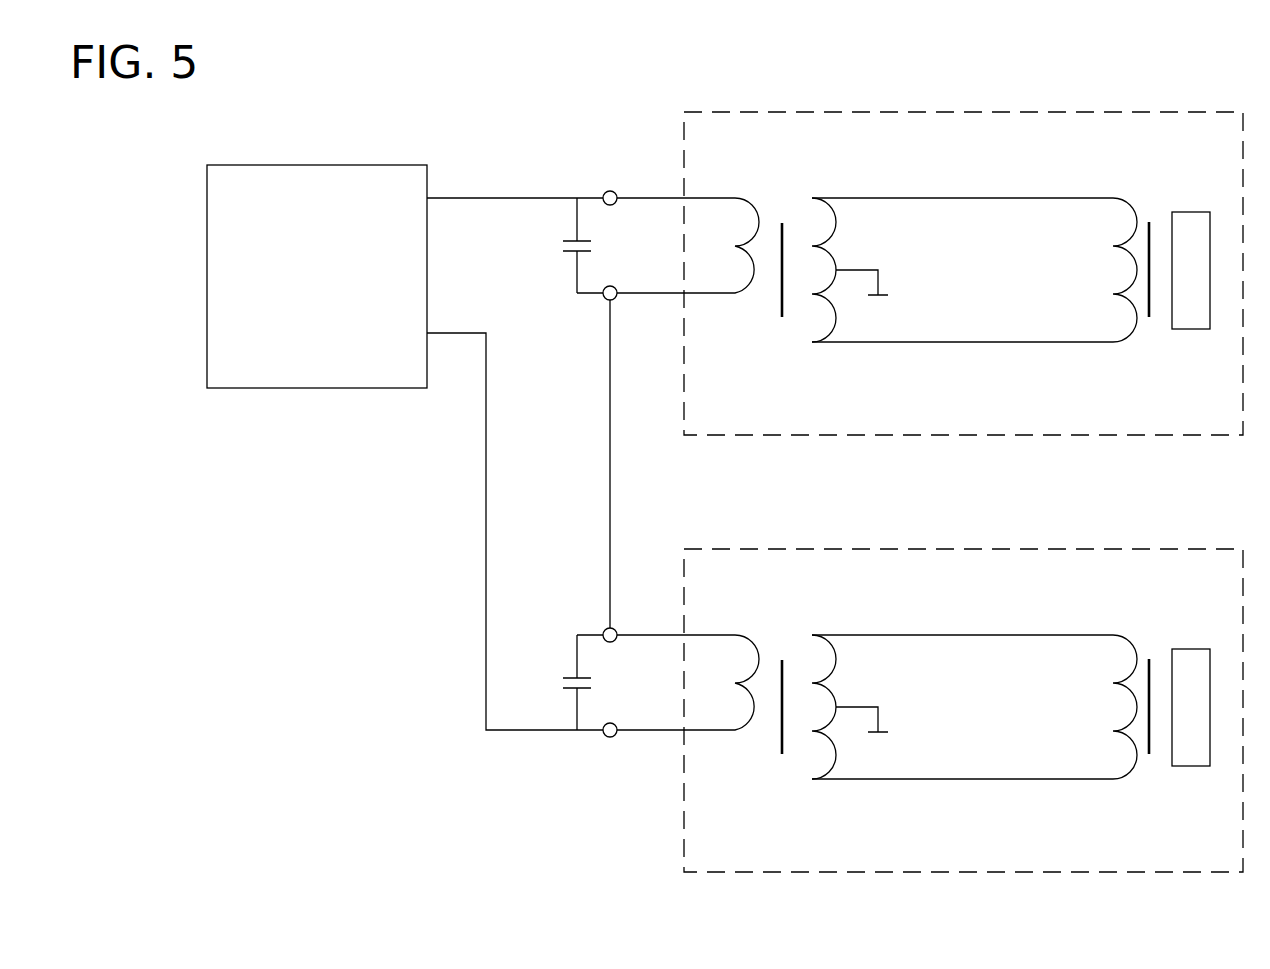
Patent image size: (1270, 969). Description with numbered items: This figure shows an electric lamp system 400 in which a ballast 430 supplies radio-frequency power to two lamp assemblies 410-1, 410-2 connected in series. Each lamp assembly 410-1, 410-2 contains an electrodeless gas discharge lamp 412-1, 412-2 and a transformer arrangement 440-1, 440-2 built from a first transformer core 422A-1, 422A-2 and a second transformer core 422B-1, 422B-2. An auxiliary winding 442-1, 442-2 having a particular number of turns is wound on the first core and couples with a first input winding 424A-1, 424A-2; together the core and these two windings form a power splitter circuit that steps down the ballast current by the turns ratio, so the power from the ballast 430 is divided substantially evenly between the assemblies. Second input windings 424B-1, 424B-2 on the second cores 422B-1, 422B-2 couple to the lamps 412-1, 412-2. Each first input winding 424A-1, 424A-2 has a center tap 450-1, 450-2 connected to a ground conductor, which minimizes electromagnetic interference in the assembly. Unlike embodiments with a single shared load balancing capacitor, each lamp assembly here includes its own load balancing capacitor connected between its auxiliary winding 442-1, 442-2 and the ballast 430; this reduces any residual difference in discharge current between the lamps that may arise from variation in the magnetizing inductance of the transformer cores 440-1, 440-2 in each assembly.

The electric lamp system 400 is at (473, 93).
The ballast 430 is at (300, 165).
The lamp assembly 410-1 is at (1110, 112).
The lamp assembly 410-2 is at (1110, 549).
The first lamp 412-1 is at (1197, 212).
The second lamp 412-2 is at (1197, 649).
The transformer core 440-1 is at (791, 170).
The transformer core 440-2 is at (791, 607).
The auxiliary winding 442-1 is at (758, 283).
The auxiliary winding 442-2 is at (758, 720).
The first center tap 450-1 is at (880, 288).
The second center tap 450-2 is at (880, 725).
The first input winding A 424A-1 is at (836, 320).
The second input winding A 424A-2 is at (836, 757).
The first input winding B 424B-1 is at (1136, 270).
The second input winding B 424B-2 is at (1136, 707).
The first core A 422A-1 is at (792, 322).
The second core A 422A-2 is at (792, 759).
The first core B 422B-1 is at (1160, 332).
The second core B 422B-2 is at (1160, 769).